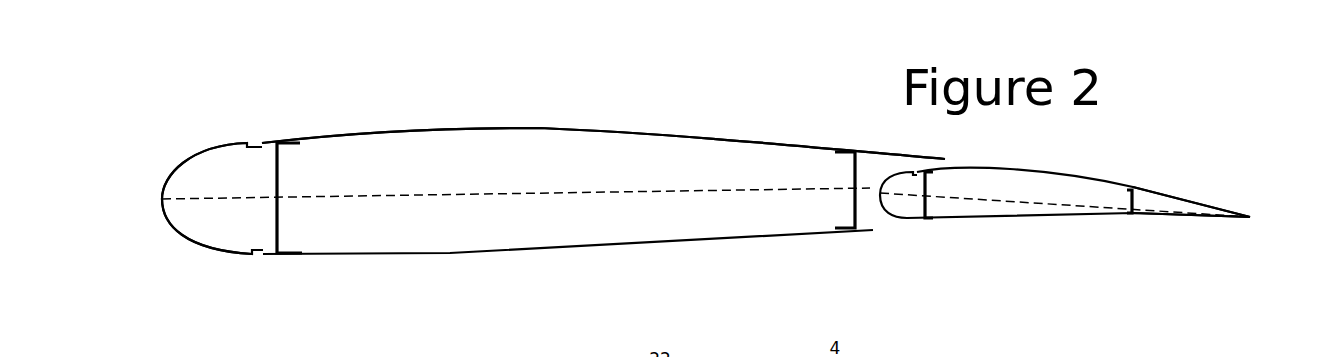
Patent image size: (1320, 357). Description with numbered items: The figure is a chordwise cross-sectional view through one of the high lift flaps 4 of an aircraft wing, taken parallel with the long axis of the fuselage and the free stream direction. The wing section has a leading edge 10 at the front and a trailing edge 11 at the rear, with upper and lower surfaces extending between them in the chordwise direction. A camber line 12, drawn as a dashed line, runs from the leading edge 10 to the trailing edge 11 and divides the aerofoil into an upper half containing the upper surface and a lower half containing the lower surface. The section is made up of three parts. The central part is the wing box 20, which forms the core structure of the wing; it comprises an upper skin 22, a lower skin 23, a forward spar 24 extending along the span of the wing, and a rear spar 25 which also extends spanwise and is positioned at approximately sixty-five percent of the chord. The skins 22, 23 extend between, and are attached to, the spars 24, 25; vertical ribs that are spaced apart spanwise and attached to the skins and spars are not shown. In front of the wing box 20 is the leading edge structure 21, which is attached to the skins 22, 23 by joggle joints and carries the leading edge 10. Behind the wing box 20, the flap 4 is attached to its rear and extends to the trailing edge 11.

The wing box 20 is at (622, 110).
The upper skin 22 is at (458, 128).
The lower skin 23 is at (528, 249).
The leading edge structure 21 is at (193, 160).
The leading edge 10 is at (162, 199).
The forward spar 24 is at (280, 190).
The rear spar 25 is at (852, 187).
The camber line 12 is at (528, 192).
The flap 4 is at (1057, 237).
The trailing edge 11 is at (1250, 218).